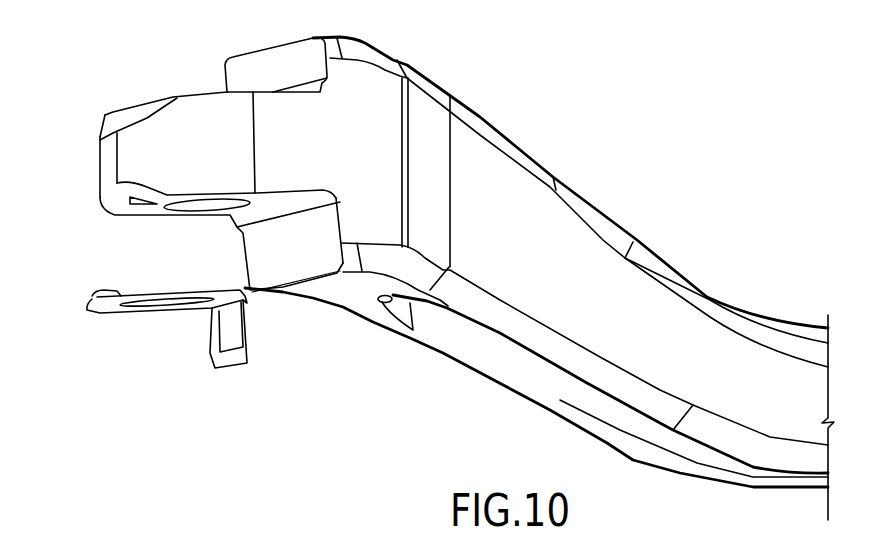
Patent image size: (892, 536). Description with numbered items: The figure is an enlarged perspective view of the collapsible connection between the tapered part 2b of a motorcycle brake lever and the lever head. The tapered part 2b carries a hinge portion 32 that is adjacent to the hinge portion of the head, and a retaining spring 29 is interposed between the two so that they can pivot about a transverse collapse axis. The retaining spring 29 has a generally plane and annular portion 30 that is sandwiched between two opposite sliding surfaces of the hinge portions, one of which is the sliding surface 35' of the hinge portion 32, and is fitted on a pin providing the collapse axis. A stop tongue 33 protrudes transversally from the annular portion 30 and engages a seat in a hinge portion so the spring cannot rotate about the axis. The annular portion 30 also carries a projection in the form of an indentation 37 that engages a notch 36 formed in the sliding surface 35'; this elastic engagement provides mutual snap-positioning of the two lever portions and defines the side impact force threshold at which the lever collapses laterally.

The tapered part 2b is at (548, 210).
The hinge portion 32 is at (155, 142).
The notch 36 is at (100, 198).
The sliding surface 35' is at (290, 275).
The retaining spring 29 is at (143, 337).
The annular portion 30 is at (153, 313).
The indentation 37 is at (103, 290).
The stop tongue 33 is at (232, 370).